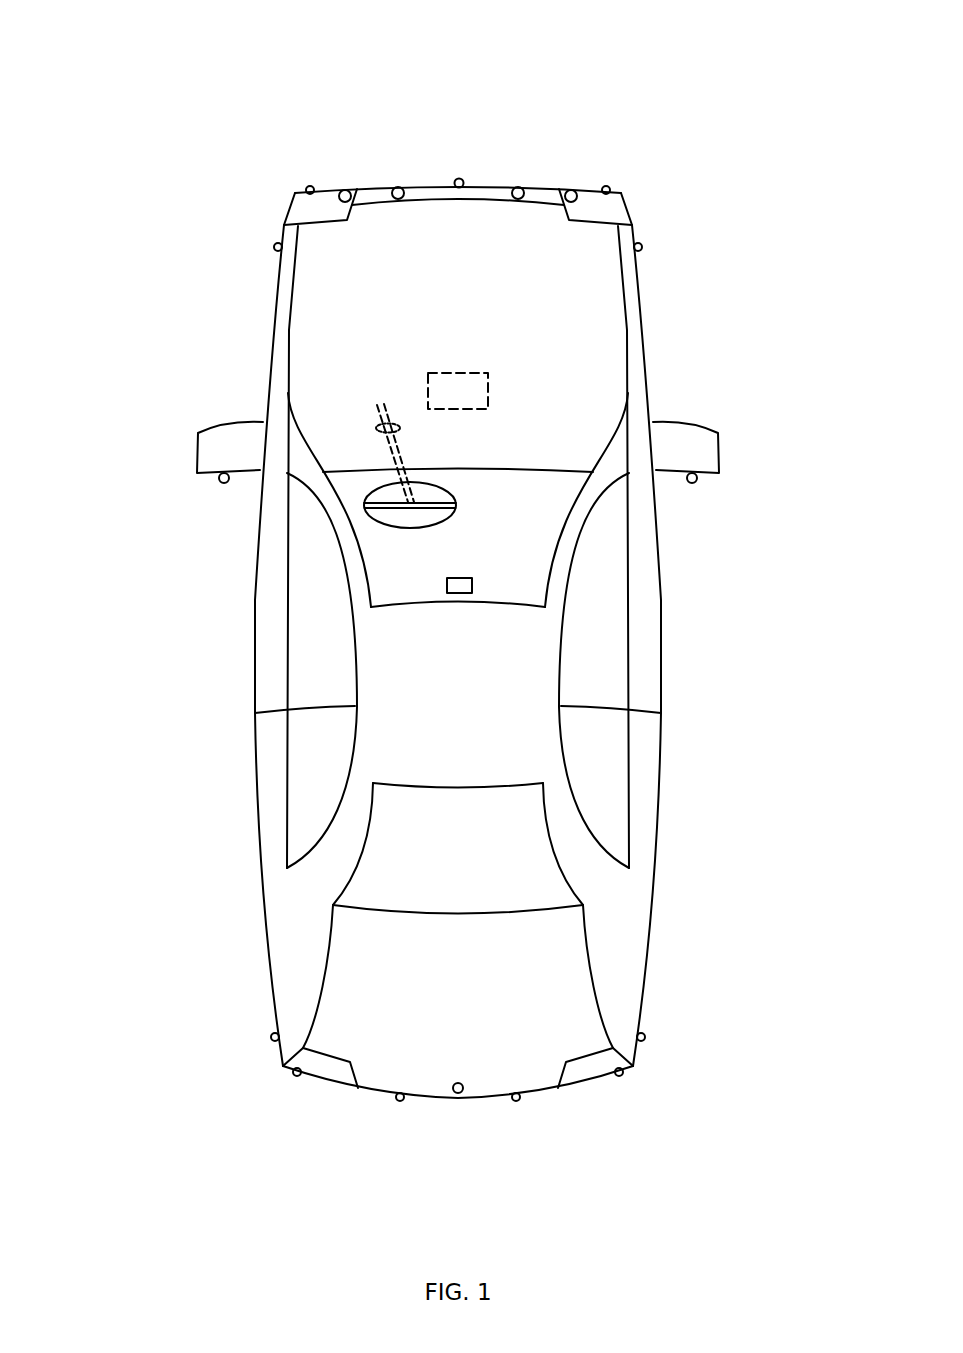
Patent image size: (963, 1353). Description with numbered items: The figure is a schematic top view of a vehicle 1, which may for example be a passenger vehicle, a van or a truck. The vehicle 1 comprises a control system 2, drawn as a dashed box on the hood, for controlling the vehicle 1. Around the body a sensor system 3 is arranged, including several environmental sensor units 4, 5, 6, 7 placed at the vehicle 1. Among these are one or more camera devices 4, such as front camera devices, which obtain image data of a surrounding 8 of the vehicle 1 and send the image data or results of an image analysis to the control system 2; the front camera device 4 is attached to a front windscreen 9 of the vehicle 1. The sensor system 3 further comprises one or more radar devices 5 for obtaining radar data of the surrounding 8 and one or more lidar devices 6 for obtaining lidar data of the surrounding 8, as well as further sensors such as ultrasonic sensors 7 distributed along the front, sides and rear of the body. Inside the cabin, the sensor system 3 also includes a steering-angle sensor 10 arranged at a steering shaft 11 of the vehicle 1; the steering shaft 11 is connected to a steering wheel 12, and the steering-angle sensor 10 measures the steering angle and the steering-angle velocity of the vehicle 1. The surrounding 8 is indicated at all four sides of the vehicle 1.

The vehicle 1 is at (98, 63).
The control system 2 is at (488, 389).
The sensor system 3 is at (678, 114).
The camera device 4 is at (455, 181).
The radar device 5 is at (393, 192).
The lidar device 6 is at (340, 194).
The ultrasonic sensor 7 is at (306, 190).
The surrounding 8 is at (450, 50).
The front windscreen 9 is at (383, 547).
The steering-angle sensor 10 is at (376, 428).
The steering shaft 11 is at (393, 445).
The steering wheel 12 is at (370, 520).